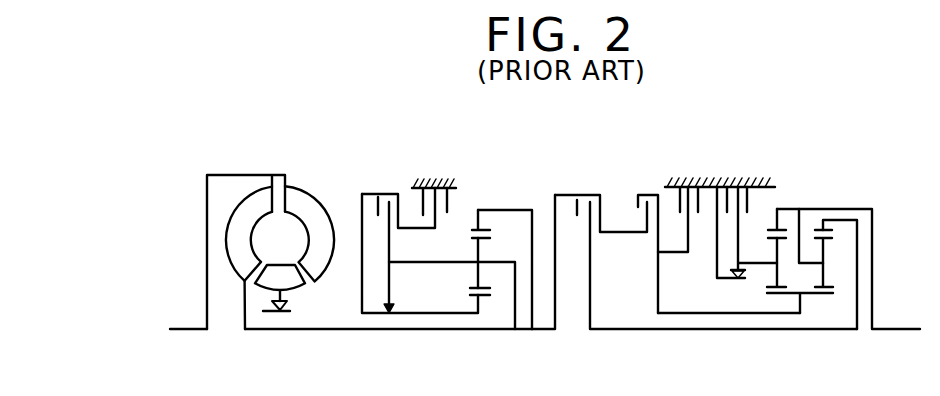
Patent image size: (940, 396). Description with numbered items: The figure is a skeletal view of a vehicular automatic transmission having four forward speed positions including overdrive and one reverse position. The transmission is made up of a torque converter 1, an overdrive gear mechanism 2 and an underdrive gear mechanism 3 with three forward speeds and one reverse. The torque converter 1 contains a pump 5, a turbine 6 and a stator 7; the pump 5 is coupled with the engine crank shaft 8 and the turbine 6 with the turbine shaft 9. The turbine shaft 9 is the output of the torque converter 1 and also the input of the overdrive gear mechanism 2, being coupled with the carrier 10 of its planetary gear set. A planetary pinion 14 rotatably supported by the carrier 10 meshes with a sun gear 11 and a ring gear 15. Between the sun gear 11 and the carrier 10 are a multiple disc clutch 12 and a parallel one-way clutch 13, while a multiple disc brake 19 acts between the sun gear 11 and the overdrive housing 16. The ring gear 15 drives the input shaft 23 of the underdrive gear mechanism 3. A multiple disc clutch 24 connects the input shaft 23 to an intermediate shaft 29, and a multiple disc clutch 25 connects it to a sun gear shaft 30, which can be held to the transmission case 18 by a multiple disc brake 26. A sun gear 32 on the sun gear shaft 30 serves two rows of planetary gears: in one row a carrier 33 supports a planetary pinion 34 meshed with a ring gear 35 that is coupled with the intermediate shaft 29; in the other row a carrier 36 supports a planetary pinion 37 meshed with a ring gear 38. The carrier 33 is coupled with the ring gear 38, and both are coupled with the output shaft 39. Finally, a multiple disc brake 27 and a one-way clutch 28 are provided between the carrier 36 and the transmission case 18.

The torque converter 1 is at (268, 170).
The overdrive gear mechanism 2 is at (449, 172).
The underdrive gear mechanism 3 is at (740, 173).
The pump 5 is at (308, 210).
The turbine 6 is at (242, 220).
The stator 7 is at (290, 276).
The engine crank shaft 8 is at (182, 328).
The turbine shaft 9 is at (425, 329).
The carrier 10 is at (493, 262).
The sun gear 11 is at (473, 294).
The multiple disc clutch 12 is at (380, 198).
The one-way clutch 13 is at (392, 302).
The planetary pinion 14 is at (472, 240).
The ring gear 15 is at (474, 230).
The overdrive housing 16 is at (412, 188).
The transmission case 18 is at (667, 192).
The multiple disc brake 19 is at (449, 193).
The input shaft 23 is at (540, 329).
The multiple disc clutch 24 is at (577, 201).
The multiple disc clutch 25 is at (637, 205).
The multiple disc brake 26 is at (703, 185).
The multiple disc brake 27 is at (748, 198).
The one-way clutch 28 is at (732, 277).
The intermediate shaft 29 is at (660, 329).
The sun gear shaft 30 is at (673, 310).
The sun gear 32 is at (813, 297).
The carrier 33 is at (803, 230).
The planetary pinion 34 is at (833, 240).
The ring gear 35 is at (826, 230).
The carrier 36 is at (738, 243).
The planetary pinion 37 is at (775, 275).
The ring gear 38 is at (780, 222).
The output shaft 39 is at (890, 329).